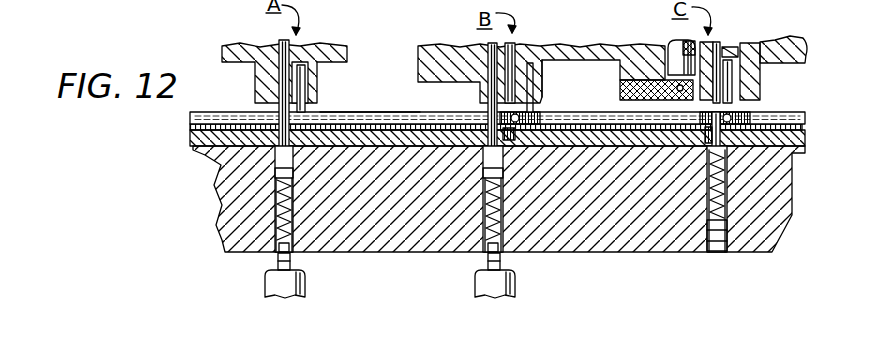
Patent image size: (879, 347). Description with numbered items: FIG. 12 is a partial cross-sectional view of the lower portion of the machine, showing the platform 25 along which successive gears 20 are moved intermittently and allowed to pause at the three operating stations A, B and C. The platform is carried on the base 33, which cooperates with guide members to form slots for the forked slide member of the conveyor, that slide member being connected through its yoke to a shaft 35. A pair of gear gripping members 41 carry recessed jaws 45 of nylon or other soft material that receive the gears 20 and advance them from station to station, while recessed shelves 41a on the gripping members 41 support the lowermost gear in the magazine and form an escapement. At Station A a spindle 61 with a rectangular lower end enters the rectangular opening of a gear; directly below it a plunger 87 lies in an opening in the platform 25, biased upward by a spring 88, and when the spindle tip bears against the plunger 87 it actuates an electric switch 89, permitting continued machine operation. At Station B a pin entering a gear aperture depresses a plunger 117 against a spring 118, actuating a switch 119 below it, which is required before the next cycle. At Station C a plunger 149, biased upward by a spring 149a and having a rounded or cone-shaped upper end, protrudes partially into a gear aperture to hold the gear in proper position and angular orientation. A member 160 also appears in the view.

The gear 20 is at (257, 112).
The platform 25 is at (410, 117).
The base 33 is at (773, 170).
The shaft 35 is at (635, 6).
The gear gripping member 41 is at (387, 113).
The shelf 41a is at (320, 112).
The recessed jaw 45 is at (532, 112).
The spindle 61 is at (280, 47).
The plunger 87 is at (280, 150).
The spring 88 is at (293, 213).
The electric switch 89 is at (303, 280).
The plunger 117 is at (498, 153).
The spring 118 is at (502, 208).
The switch 119 is at (480, 275).
The plunger 149 is at (708, 140).
The spring 149a is at (723, 207).
The member 160 is at (878, 10).